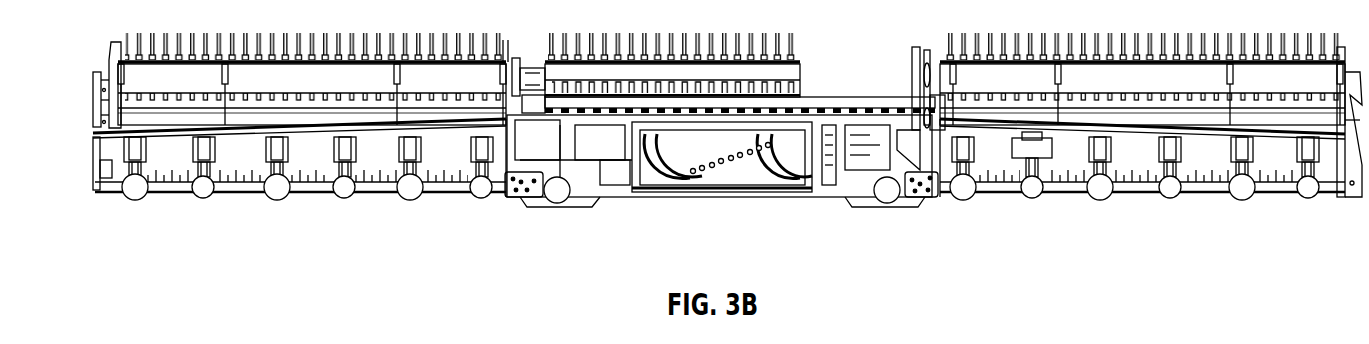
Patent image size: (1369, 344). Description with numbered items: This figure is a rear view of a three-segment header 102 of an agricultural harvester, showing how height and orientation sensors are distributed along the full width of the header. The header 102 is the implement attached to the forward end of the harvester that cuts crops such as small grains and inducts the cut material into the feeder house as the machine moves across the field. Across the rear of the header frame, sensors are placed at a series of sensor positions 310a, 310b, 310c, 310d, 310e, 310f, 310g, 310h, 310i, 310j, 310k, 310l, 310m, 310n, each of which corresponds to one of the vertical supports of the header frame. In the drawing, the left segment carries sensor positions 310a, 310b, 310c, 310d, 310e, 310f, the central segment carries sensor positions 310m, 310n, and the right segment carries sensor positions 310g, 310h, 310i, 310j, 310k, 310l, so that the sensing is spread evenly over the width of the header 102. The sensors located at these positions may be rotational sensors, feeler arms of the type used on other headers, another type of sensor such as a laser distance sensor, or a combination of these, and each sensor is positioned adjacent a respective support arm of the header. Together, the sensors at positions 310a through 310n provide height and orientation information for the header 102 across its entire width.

The header 102 is at (92, 136).
The sensor position 310a is at (133, 187).
The sensor position 310b is at (203, 188).
The sensor position 310c is at (277, 187).
The sensor position 310d is at (343, 188).
The sensor position 310e is at (410, 187).
The sensor position 310f is at (480, 188).
The sensor position 310g is at (963, 188).
The sensor position 310h is at (1032, 188).
The sensor position 310i is at (1100, 188).
The sensor position 310j is at (1170, 188).
The sensor position 310k is at (1242, 188).
The sensor position 310l is at (1308, 188).
The sensor position 310m is at (558, 193).
The sensor position 310n is at (887, 190).